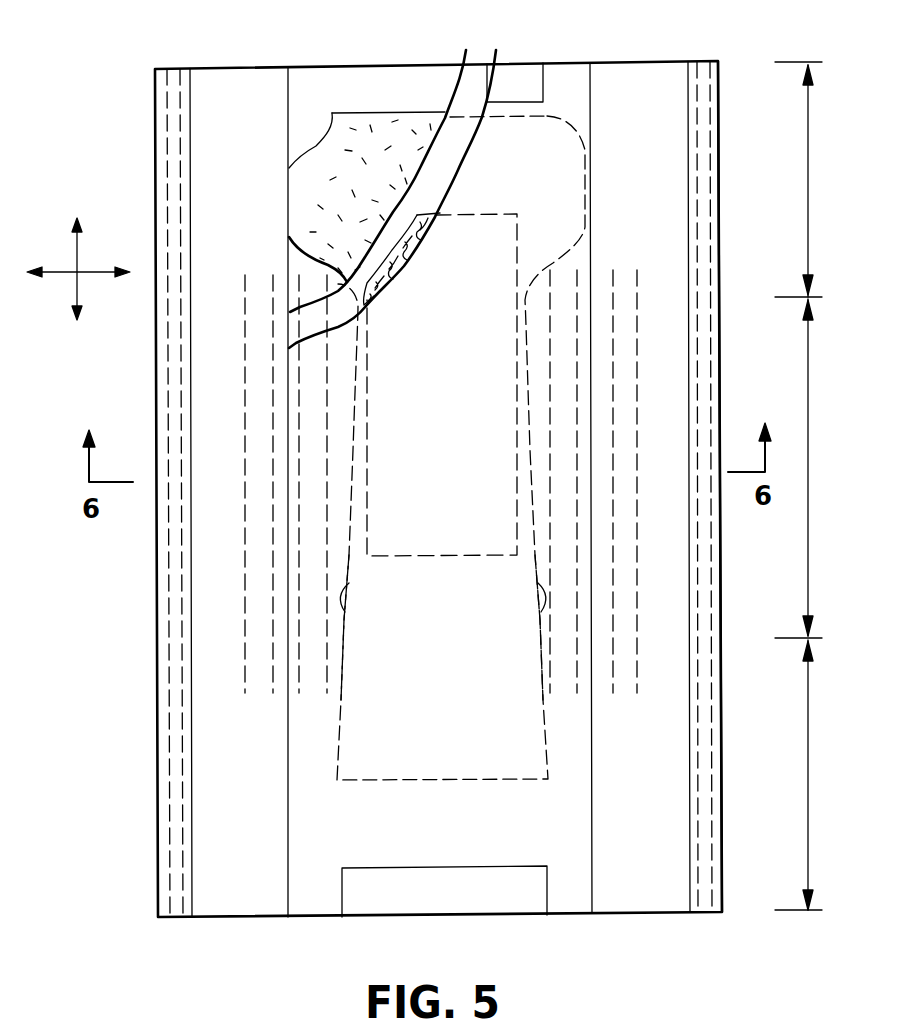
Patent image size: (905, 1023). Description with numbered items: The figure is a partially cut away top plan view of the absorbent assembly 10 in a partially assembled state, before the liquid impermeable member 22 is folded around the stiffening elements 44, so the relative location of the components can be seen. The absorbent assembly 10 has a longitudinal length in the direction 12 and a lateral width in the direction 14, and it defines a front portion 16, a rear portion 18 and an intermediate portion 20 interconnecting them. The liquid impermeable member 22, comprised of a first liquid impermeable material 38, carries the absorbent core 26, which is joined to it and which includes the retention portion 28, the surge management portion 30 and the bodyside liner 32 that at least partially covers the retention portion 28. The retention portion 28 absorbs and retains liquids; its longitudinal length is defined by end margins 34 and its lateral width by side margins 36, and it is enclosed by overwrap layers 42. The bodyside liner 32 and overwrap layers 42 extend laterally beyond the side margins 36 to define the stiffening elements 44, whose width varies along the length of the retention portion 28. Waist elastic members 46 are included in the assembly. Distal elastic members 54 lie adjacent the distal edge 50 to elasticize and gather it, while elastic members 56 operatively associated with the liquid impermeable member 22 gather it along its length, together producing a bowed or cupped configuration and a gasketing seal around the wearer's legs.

The absorbent assembly 10 is at (186, 62).
The longitudinal direction 12 is at (78, 285).
The lateral direction 14 is at (88, 265).
The front portion 16 is at (808, 163).
The rear portion 18 is at (808, 746).
The intermediate portion 20 is at (808, 455).
The liquid impermeable member 22 is at (246, 139).
The absorbent core 26 is at (548, 112).
The retention portion 28 is at (362, 197).
The surge management portion 30 is at (410, 262).
The bodyside liner 32 is at (431, 344).
The end margins 34 is at (517, 118).
The side margins 36 is at (349, 583).
The first liquid impermeable material 38 is at (364, 104).
The overwrap layers 42 is at (309, 176).
The stiffening elements 44 is at (323, 722).
The waist elastic members 46 is at (508, 78).
The distal edge 50 is at (722, 678).
The distal elastic members 54 is at (183, 710).
The elastic members 56 is at (245, 450).